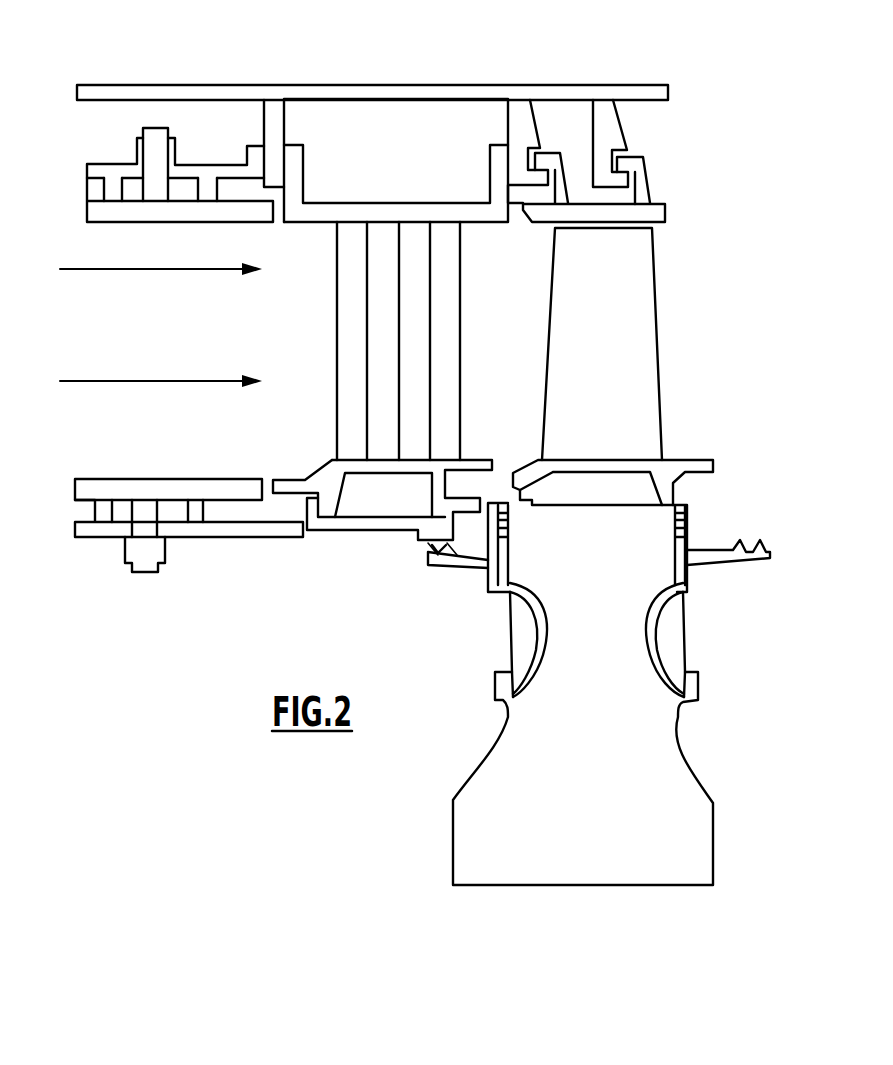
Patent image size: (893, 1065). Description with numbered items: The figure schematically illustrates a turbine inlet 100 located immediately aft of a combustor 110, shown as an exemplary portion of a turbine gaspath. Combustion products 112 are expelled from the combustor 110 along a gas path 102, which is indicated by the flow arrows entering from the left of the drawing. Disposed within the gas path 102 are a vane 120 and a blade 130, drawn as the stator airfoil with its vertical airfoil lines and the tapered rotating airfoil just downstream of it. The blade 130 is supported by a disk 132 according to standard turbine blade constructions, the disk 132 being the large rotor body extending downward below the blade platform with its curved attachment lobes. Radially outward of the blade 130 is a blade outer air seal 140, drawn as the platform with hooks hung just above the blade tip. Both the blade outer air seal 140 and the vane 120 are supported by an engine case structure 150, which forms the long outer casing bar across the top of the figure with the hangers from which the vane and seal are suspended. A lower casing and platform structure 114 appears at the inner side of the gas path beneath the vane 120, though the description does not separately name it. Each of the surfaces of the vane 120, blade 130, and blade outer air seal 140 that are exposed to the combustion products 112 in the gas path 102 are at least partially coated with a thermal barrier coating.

The turbine inlet 100 is at (703, 57).
The gas path 102 is at (160, 256).
The combustor 110 is at (160, 344).
The combustion products 112 is at (163, 382).
The inner platform / lower casing 114 is at (148, 510).
The vane 120 is at (448, 233).
The blade 130 is at (652, 366).
The disk 132 is at (677, 767).
The blade outer air seal 140 is at (658, 205).
The engine case structure 150 is at (483, 90).